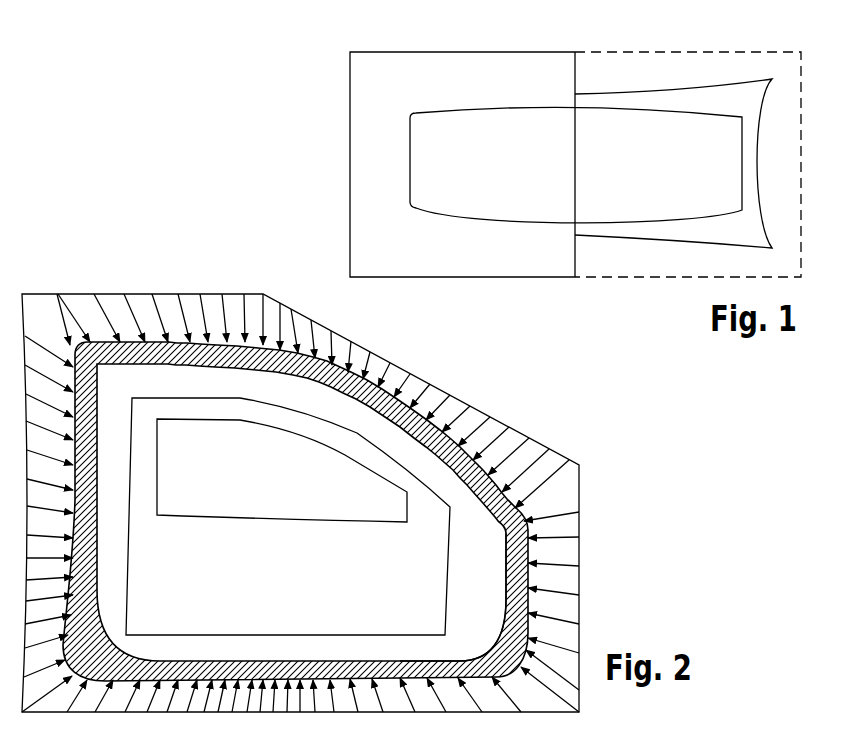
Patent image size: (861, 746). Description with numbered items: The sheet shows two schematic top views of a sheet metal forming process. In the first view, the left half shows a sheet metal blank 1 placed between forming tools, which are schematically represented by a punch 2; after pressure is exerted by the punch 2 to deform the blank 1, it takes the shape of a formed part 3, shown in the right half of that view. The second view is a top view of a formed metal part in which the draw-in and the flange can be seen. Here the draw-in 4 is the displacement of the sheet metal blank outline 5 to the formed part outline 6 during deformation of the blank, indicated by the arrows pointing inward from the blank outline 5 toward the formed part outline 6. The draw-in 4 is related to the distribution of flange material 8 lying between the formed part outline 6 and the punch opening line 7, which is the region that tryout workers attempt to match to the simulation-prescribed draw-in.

In FIG. 1, the sheet metal blank 1 is at (370, 110).
In FIG. 1, the punch 2 is at (448, 113).
In FIG. 1, the formed part 3 is at (643, 102).
In FIG. 2, the formed part 3 is at (328, 482).
In FIG. 2, the draw-in 4 is at (463, 413).
In FIG. 2, the sheet metal blank outline 5 is at (393, 367).
In FIG. 2, the formed part outline 6 is at (493, 475).
In FIG. 2, the punch opening line 7 is at (502, 587).
In FIG. 2, the flange material 8 is at (503, 512).